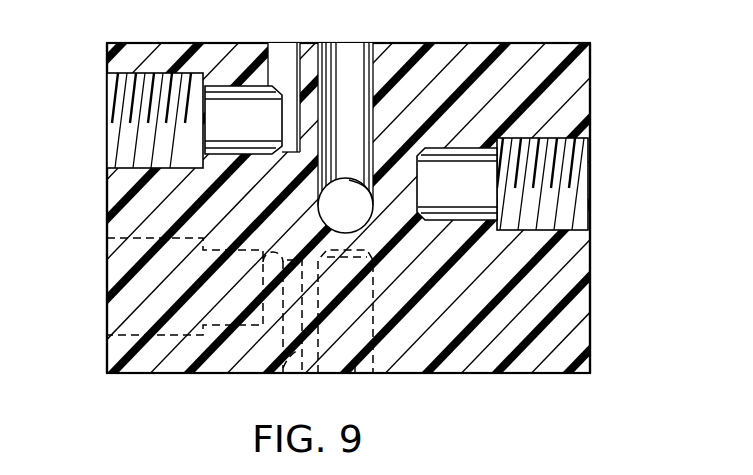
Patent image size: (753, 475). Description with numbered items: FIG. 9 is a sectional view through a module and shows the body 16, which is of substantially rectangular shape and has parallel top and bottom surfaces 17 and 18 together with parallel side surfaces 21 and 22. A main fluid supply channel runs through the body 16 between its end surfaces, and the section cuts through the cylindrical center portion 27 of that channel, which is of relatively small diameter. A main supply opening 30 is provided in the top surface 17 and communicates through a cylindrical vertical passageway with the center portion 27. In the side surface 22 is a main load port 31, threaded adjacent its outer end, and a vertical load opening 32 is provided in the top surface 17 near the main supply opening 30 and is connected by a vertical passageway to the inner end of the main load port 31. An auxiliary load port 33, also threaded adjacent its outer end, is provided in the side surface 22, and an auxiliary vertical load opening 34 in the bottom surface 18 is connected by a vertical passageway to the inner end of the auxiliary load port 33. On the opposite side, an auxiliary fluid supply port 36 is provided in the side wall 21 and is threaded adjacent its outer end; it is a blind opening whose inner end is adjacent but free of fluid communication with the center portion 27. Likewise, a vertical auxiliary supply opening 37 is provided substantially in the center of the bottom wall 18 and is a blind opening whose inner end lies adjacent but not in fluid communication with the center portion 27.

The body 16 is at (583, 67).
The top surface 17 is at (453, 43).
The bottom surface 18 is at (400, 374).
The side surface 21 is at (590, 265).
The side surface 22 is at (107, 215).
The center portion 27 is at (350, 172).
The main supply opening 30 is at (361, 63).
The main load port 31 is at (108, 86).
The vertical load opening 32 is at (268, 62).
The auxiliary load port 33 is at (123, 335).
The auxiliary vertical load opening 34 is at (283, 375).
The auxiliary fluid supply port 36 is at (563, 141).
The auxiliary supply opening 37 is at (352, 372).